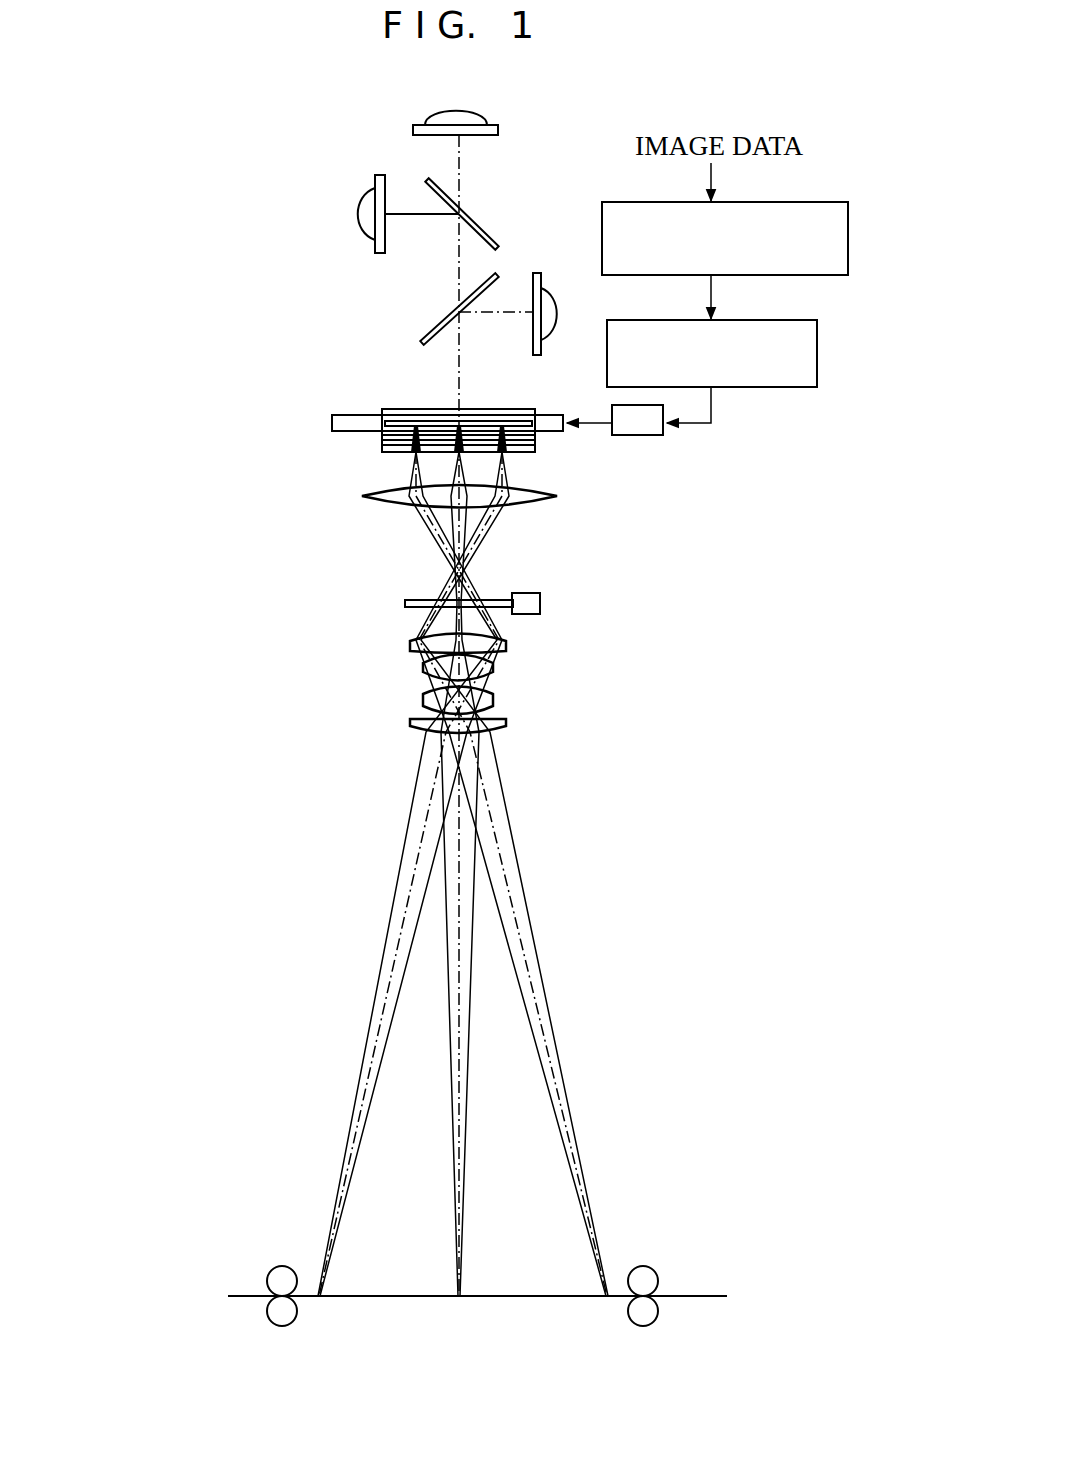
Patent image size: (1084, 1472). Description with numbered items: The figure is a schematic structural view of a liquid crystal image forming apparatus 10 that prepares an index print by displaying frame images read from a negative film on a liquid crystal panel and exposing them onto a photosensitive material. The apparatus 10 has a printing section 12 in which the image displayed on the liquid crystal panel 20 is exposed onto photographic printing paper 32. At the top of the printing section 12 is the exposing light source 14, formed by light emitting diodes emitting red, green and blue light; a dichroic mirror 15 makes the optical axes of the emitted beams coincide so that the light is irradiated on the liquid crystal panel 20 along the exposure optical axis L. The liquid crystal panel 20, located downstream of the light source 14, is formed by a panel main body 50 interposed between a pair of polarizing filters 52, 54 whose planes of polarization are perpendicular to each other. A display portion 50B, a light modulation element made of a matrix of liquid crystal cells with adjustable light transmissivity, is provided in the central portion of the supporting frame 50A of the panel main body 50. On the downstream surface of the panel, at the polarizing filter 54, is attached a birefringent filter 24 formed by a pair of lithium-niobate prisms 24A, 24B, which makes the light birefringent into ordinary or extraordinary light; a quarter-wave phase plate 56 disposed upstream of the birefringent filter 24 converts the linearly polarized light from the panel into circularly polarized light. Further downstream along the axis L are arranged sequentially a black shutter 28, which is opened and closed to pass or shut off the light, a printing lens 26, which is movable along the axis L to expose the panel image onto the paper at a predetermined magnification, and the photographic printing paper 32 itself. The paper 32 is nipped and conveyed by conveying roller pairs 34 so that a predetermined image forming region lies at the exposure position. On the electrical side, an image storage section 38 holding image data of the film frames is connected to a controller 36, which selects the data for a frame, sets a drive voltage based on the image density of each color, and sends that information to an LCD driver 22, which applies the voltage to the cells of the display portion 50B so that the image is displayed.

The liquid crystal image forming apparatus 10 is at (567, 160).
The printing section 12 is at (347, 587).
The exposing light source 14 is at (380, 143).
The dichroic mirror 15 is at (493, 273).
The liquid crystal panel 20 is at (330, 424).
The LCD driver 22 is at (663, 434).
The birefringent filter 24 is at (698, 517).
The lithium-niobate prism 24A is at (535, 445).
The lithium-niobate prism 24B is at (535, 452).
The printing lens 26 is at (521, 638).
The black shutter 28 is at (502, 597).
The photographic printing paper 32 is at (531, 1295).
The conveying roller pairs 34 is at (281, 1266).
The controller 36 is at (795, 388).
The image storage section 38 is at (803, 276).
The panel main body 50 is at (440, 362).
The supporting frame 50A is at (370, 423).
The display portion 50B is at (400, 421).
The polarizing filter 52 is at (535, 409).
The polarizing filter 54 is at (535, 435).
The quarter-wave phase plate 56 is at (535, 440).
The exposure optical axis L is at (459, 1017).